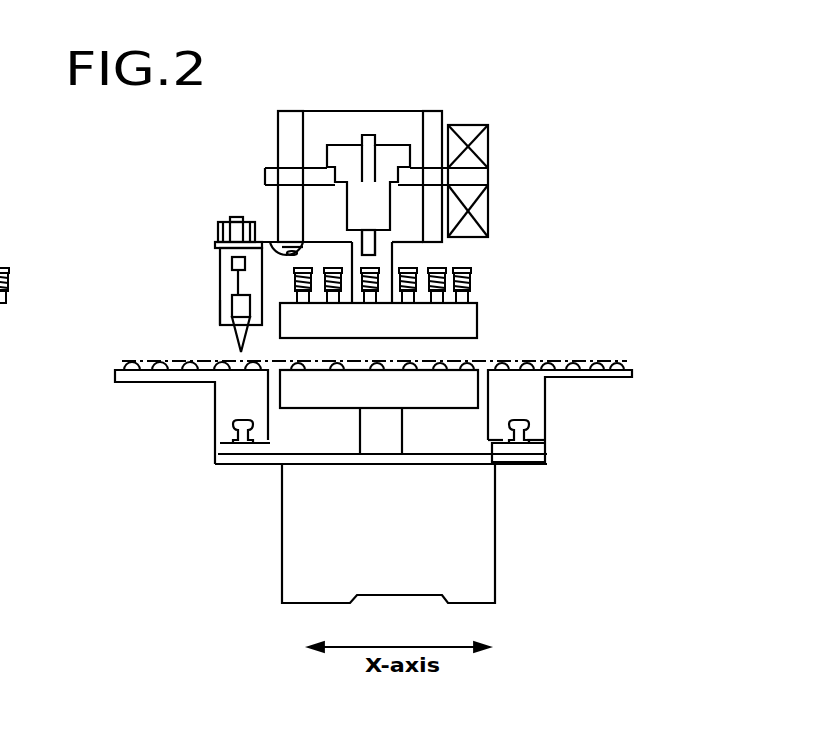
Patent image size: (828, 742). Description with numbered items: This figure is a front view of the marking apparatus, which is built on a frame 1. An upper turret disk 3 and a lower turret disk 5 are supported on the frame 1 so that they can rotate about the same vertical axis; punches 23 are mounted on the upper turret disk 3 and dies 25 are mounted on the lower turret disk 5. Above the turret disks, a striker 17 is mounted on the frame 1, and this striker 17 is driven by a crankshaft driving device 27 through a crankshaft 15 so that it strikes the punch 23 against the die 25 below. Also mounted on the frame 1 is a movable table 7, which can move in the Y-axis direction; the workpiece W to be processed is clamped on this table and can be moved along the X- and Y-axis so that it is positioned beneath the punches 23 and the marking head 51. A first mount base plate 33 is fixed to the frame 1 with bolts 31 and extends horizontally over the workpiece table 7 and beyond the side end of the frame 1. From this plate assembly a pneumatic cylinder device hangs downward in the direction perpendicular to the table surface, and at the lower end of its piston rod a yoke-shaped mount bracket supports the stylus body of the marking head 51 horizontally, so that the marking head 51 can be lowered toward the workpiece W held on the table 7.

The frame 1 is at (490, 548).
The upper turret disk 3 is at (462, 317).
The lower turret disk 5 is at (445, 387).
The movable table 7 is at (155, 383).
The crankshaft 15 is at (387, 157).
The striker 17 is at (375, 247).
The punches 23 is at (472, 277).
The dies 25 is at (375, 372).
The crankshaft driving device 27 is at (478, 148).
The bolts 31 is at (272, 242).
The first mount base plate 33 is at (215, 245).
The marking head 51 is at (210, 328).
The workpiece W is at (140, 360).